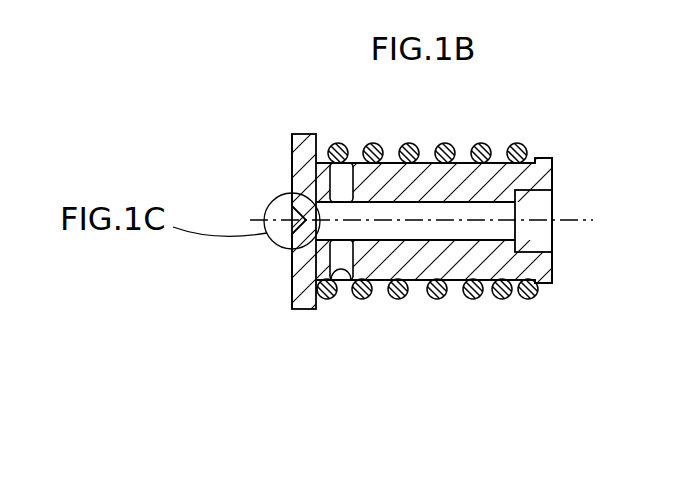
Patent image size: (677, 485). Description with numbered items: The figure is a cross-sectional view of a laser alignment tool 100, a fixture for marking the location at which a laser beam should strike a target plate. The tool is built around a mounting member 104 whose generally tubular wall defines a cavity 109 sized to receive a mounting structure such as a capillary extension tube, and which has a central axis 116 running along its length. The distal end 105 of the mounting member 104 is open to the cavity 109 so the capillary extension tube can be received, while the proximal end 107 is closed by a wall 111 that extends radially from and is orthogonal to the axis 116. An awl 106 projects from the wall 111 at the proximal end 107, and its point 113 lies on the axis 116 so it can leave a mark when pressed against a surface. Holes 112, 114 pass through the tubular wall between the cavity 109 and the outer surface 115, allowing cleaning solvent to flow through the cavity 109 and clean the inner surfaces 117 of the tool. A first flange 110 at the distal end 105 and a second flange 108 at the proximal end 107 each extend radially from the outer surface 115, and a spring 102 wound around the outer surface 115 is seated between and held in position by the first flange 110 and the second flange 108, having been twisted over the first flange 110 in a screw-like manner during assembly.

The laser alignment tool 100 is at (395, 315).
The spring 102 is at (525, 296).
The mounting member 104 is at (497, 293).
The distal end 105 is at (552, 175).
The awl 106 is at (274, 240).
The proximal end 107 is at (292, 281).
The second flange 108 is at (305, 135).
The cavity 109 is at (533, 250).
The first flange 110 is at (545, 160).
The wall 111 is at (292, 170).
The hole 112 is at (344, 268).
The point 113 is at (282, 216).
The hole 114 is at (342, 214).
The outer surface 115 is at (465, 158).
The central axis 116 is at (563, 219).
The inner surfaces 117 is at (490, 240).